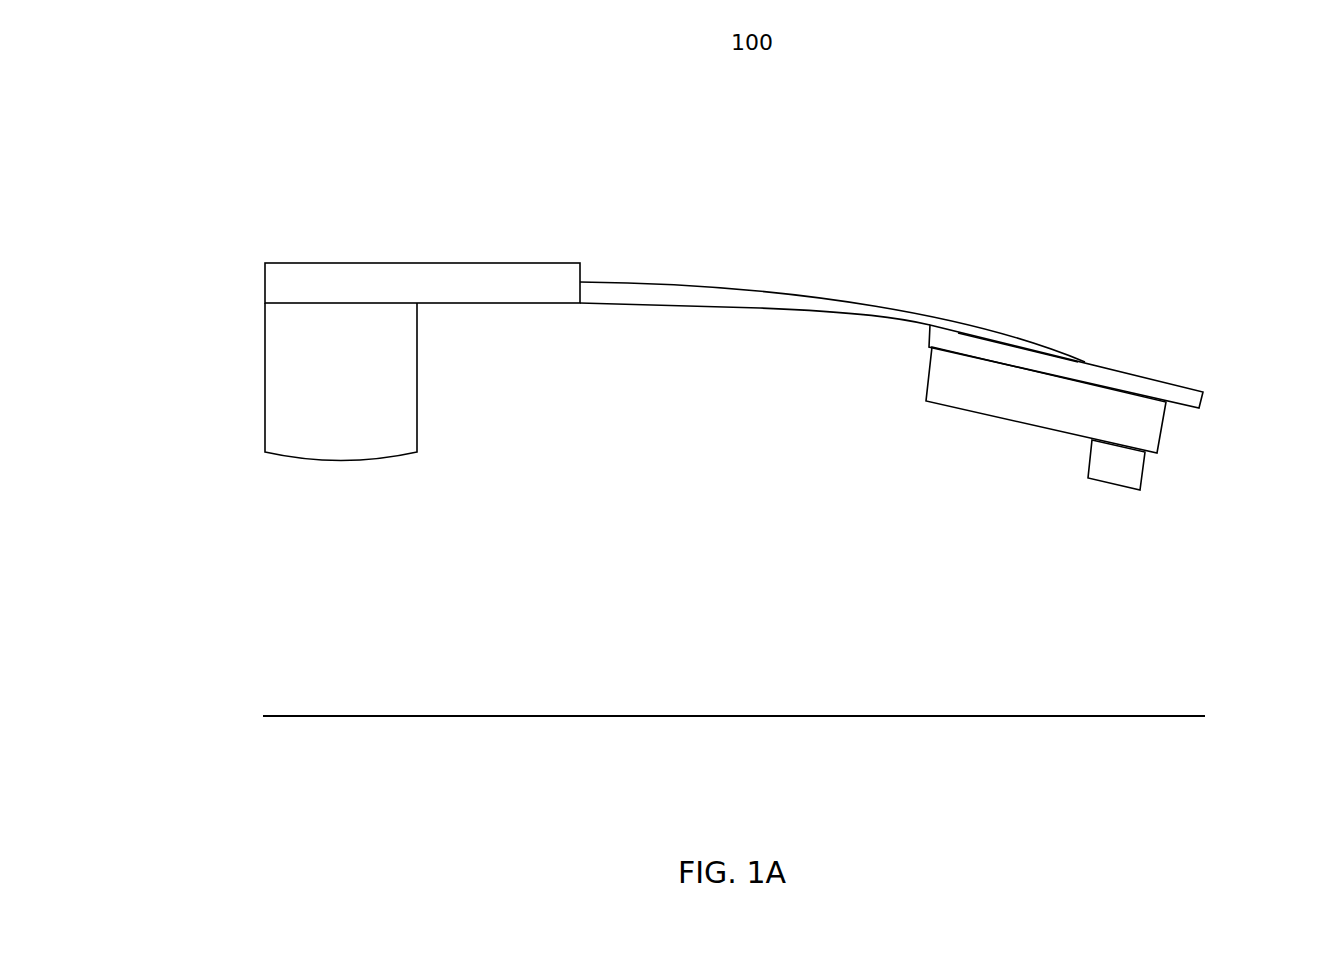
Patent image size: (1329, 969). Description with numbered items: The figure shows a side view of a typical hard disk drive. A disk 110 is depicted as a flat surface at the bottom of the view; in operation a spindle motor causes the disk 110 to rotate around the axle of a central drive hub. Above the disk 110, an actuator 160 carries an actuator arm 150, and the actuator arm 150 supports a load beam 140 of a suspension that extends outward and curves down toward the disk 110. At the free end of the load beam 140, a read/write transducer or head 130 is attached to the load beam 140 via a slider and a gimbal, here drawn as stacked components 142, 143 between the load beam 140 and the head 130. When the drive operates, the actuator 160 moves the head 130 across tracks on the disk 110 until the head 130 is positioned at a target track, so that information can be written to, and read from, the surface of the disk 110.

The disk 110 is at (678, 716).
The read/write transducer or head 130 is at (1152, 470).
The load beam 140 is at (809, 308).
The flexure / gimbal 142 is at (1147, 425).
The flexure tab 143 is at (1181, 391).
The actuator arm 150 is at (434, 263).
The actuator 160 is at (284, 382).